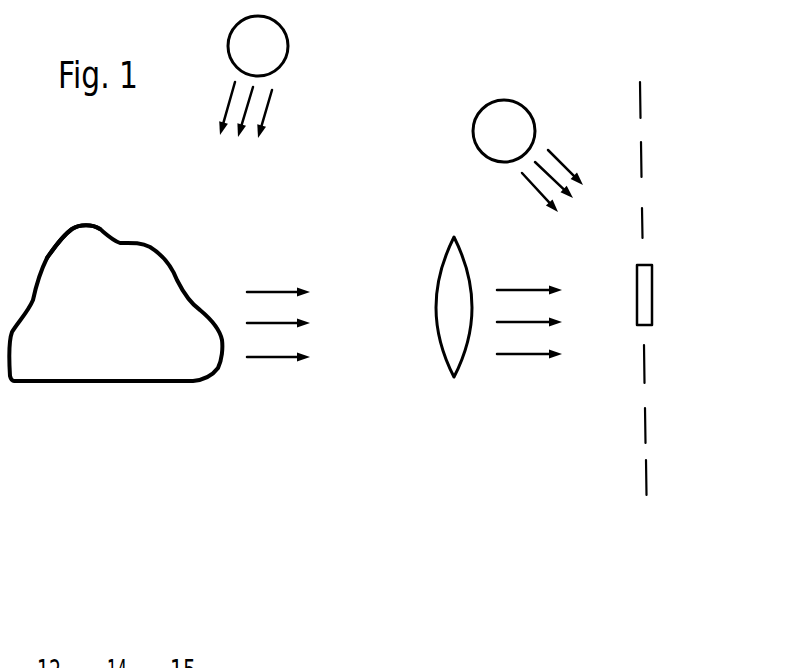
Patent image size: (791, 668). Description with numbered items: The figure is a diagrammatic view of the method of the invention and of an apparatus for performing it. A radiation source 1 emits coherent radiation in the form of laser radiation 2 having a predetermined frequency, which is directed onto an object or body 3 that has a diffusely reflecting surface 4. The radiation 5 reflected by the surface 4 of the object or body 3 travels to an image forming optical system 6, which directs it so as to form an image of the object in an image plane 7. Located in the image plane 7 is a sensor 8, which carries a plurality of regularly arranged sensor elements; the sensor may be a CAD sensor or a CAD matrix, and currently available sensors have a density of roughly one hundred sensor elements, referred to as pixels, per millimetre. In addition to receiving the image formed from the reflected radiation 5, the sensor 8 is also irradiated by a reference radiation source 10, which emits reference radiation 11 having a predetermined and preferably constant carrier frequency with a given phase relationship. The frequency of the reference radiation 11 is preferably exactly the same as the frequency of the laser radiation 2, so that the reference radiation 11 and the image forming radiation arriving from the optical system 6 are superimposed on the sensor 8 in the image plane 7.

The light source 1 is at (278, 52).
The laser radiation 2 is at (268, 105).
The object or body 3 is at (58, 275).
The diffusely reflecting surface 4 is at (142, 243).
The reflected radiation 5 is at (270, 358).
The image forming optical system 6 is at (448, 333).
The image plane 7 is at (640, 100).
The sensor 8 is at (642, 302).
The reference radiation source 10 is at (500, 112).
The reference radiation 11 is at (557, 160).